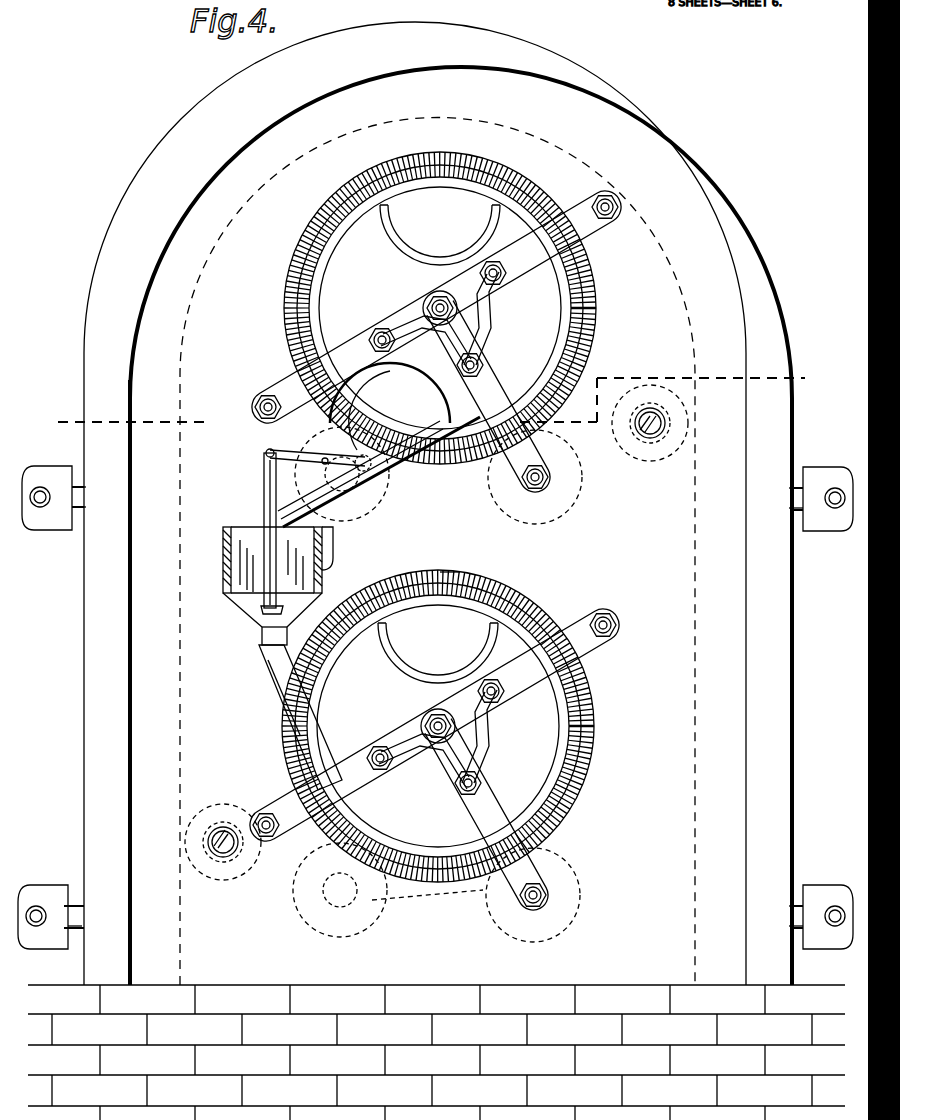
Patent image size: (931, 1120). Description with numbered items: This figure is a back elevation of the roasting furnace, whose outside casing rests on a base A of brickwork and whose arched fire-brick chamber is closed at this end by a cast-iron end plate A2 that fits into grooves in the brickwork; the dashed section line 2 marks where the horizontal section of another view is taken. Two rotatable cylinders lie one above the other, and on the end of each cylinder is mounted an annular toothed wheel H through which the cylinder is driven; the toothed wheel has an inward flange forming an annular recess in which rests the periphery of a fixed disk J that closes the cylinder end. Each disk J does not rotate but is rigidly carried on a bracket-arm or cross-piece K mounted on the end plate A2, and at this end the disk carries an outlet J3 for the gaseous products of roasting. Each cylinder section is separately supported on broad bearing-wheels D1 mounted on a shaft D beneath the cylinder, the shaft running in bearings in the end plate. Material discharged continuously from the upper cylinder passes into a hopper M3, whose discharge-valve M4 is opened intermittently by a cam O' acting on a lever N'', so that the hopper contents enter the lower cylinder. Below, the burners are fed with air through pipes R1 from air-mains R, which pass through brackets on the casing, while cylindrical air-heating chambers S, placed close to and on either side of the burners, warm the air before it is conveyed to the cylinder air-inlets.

The base A is at (436, 1052).
The cast-iron end plate A2 is at (200, 418).
The section line 2 2 is at (439, 405).
The fixed disk J is at (348, 290).
The outlet for gaseous products J3 is at (423, 645).
The bracket-arm or cross-piece K is at (305, 360).
The annular toothed wheel H is at (452, 582).
The cam O' is at (390, 406).
The lever N'' is at (351, 512).
The hopper M3 is at (292, 556).
The discharge-valve M4 is at (252, 610).
The shaft D is at (272, 884).
The bearing-wheel D1 is at (447, 912).
The air-heating chamber S is at (660, 424).
The air-main R is at (51, 471).
The air pipe R1 is at (806, 905).